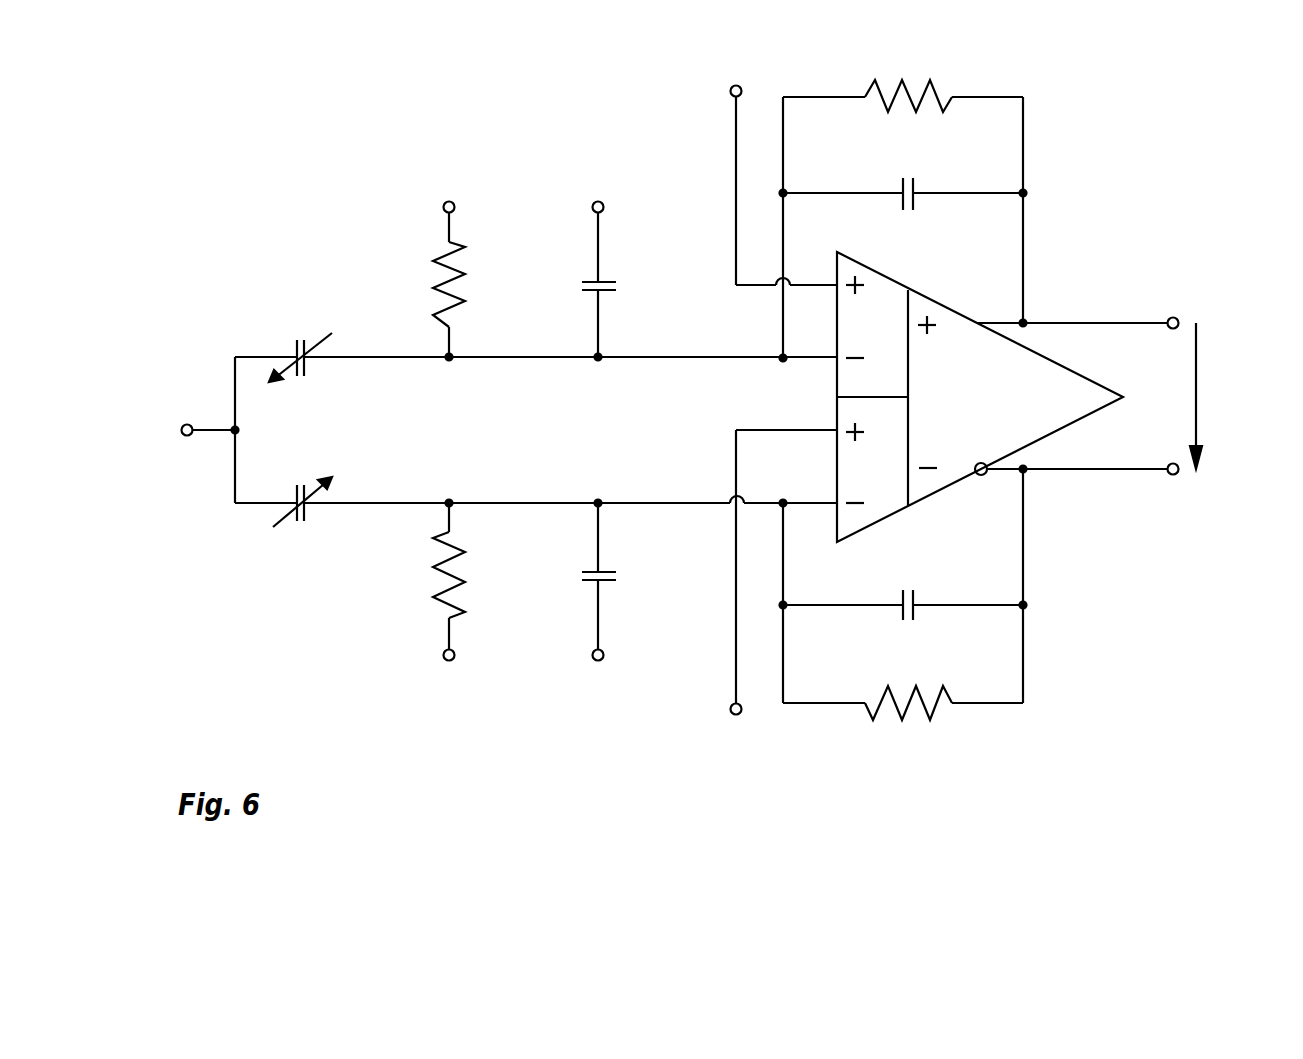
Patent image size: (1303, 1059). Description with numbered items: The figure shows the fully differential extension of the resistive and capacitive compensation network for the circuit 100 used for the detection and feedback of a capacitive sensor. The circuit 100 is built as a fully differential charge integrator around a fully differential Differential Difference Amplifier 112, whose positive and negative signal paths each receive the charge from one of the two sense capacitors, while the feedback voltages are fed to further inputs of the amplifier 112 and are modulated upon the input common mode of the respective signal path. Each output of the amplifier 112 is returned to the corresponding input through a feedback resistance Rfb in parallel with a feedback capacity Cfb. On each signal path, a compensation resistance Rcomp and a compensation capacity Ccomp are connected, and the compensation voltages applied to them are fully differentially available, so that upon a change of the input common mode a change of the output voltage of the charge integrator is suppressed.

The circuit 100 is at (691, 444).
The Differential Difference Amplifier 112 is at (1032, 425).
The feedback resistor Rfb is at (903, 405).
The feedback capacitor Cfb is at (903, 404).
The compensation resistance Rcomp is at (495, 431).
The compensation capacity Ccomp is at (644, 431).